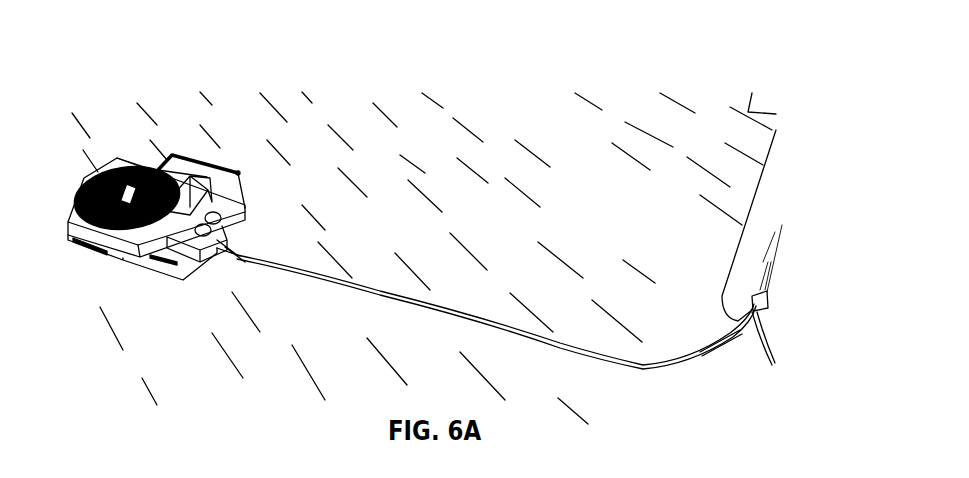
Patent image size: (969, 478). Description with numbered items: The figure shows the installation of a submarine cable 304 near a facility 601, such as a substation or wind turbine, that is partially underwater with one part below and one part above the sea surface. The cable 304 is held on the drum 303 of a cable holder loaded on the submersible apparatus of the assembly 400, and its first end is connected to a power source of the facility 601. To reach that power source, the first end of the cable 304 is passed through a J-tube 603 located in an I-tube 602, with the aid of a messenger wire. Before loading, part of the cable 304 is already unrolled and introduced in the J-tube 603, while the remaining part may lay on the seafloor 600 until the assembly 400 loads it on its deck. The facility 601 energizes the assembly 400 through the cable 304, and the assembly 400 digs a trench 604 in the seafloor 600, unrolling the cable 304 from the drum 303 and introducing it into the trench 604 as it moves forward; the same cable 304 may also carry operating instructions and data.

The seafloor 600 is at (532, 92).
The facility 601 is at (762, 183).
The I-tube 602 is at (763, 283).
The J-tube 603 is at (747, 318).
The submarine cable 304 is at (725, 364).
The trench 604 is at (380, 268).
The assembly 400 is at (184, 130).
The drum 303 is at (58, 215).